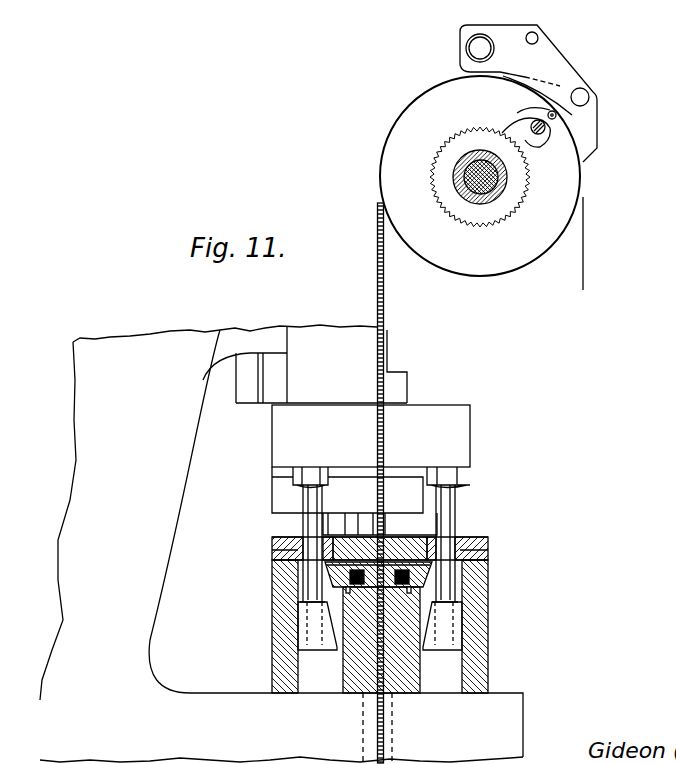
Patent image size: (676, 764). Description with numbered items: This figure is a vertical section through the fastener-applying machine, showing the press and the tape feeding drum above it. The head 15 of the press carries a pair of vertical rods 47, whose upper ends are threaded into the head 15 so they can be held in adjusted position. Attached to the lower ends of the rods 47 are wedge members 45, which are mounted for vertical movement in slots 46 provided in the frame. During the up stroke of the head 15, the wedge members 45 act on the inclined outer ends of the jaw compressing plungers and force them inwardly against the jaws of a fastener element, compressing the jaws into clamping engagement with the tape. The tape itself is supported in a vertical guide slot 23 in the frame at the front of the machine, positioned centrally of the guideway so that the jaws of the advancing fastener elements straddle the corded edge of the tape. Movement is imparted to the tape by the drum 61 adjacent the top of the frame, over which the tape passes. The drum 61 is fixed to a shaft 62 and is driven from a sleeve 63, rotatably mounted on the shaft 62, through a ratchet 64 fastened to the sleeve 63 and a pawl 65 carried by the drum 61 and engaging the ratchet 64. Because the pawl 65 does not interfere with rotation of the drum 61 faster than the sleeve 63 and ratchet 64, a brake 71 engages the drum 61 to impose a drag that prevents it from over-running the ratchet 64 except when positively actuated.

The head 15 is at (463, 440).
The slot 23 is at (380, 708).
The wedge members 45 is at (320, 648).
The slots 46 is at (307, 680).
The vertical rods 47 is at (308, 520).
The drum 61 is at (470, 257).
The shaft 62 is at (493, 190).
The sleeve 63 is at (457, 192).
The ratchet 64 is at (513, 183).
The pawl 65 is at (532, 134).
The brake 71 is at (583, 137).